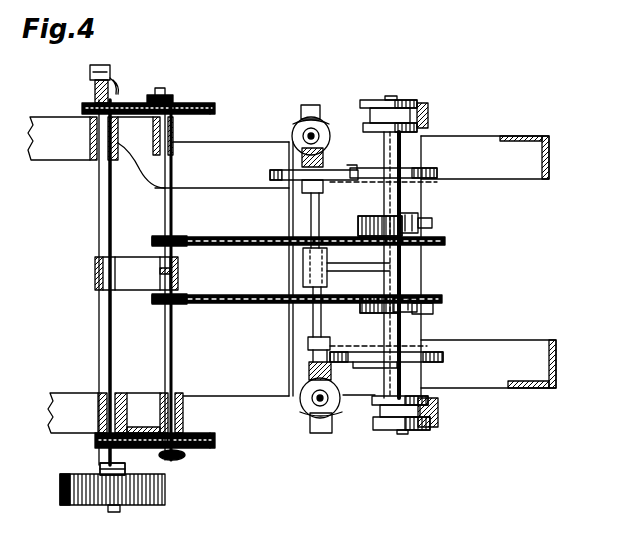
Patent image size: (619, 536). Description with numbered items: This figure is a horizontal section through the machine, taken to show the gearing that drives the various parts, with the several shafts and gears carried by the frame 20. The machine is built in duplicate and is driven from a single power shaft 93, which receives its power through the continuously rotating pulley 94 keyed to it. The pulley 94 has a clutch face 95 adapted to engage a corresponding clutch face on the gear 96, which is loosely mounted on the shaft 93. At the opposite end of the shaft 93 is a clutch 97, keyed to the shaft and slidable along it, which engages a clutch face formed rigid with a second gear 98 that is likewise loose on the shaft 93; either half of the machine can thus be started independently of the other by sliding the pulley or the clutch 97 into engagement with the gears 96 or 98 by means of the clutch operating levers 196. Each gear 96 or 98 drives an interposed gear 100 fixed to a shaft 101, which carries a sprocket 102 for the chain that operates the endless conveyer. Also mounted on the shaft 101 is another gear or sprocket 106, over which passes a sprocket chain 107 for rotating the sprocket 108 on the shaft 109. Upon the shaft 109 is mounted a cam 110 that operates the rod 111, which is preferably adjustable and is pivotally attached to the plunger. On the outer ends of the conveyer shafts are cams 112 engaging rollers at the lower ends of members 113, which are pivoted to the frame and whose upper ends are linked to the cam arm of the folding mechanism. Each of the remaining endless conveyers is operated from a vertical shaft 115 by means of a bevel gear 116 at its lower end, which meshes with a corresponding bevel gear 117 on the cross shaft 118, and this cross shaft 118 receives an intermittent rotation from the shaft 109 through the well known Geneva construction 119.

The frame 20 is at (494, 178).
The power shaft 93 is at (100, 348).
The pulley 94 is at (147, 502).
The clutch face 95 is at (100, 470).
The gear 96 is at (95, 441).
The clutch 97 is at (118, 88).
The gear 98 is at (82, 108).
The interposed gear 100 is at (210, 103).
The shaft 101 is at (162, 200).
The sprocket 102 is at (167, 94).
The gear or sprocket 106 is at (173, 238).
The sprocket chain 107 is at (247, 236).
The sprocket 108 is at (407, 238).
The shaft 109 is at (405, 191).
The cam 110 is at (420, 224).
The rod 111 is at (432, 219).
The cam 112 is at (396, 98).
The member 113 is at (430, 114).
The vertical shaft 115 is at (302, 136).
The bevel gear 116 is at (319, 128).
The bevel gear 117 is at (304, 117).
The cross shaft 118 is at (310, 208).
The Geneva construction 119 is at (353, 181).
The clutch operating lever 196 is at (90, 74).